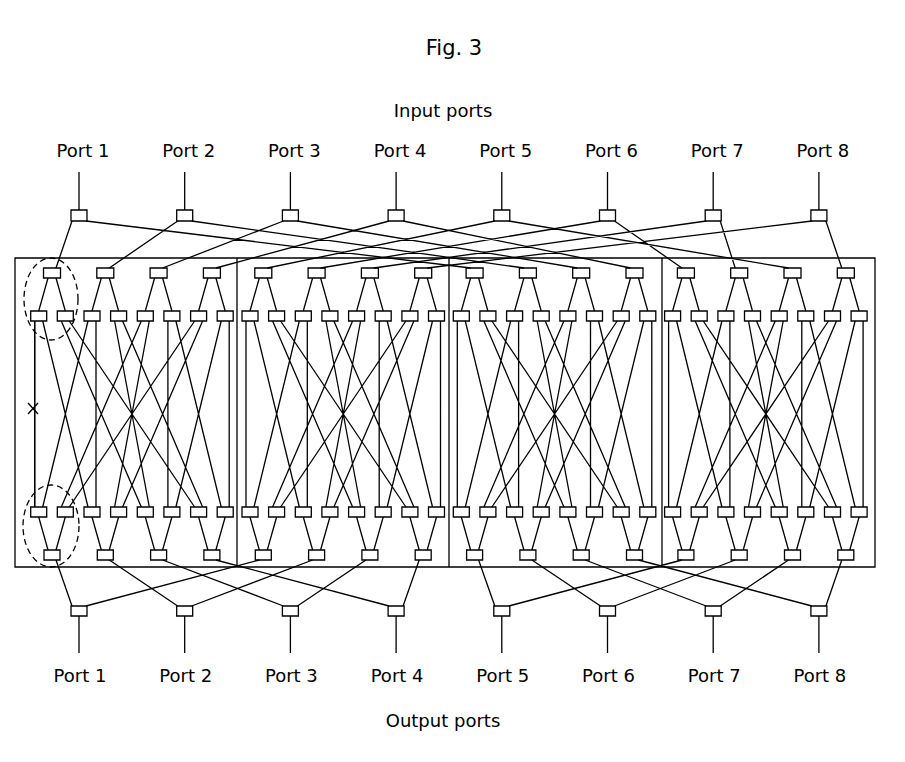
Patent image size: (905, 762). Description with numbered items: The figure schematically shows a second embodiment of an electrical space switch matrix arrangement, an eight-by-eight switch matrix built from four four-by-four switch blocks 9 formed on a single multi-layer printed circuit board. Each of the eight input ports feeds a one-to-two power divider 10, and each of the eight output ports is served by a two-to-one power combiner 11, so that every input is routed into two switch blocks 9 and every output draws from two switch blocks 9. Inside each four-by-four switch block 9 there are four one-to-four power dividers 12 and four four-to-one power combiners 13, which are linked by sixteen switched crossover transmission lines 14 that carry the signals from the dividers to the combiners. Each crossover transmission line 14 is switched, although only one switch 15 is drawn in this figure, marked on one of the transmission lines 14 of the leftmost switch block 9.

The switch block 9 is at (862, 257).
The 1:2 power divider 10 is at (62, 213).
The 2:1 power combiner 11 is at (63, 615).
The 1:4 power divider 12 is at (29, 260).
The 4:1 power combiner 13 is at (45, 568).
The switched crossover transmission line 14 is at (30, 374).
The switch 15 is at (38, 410).